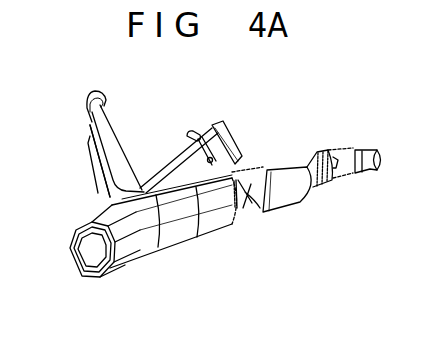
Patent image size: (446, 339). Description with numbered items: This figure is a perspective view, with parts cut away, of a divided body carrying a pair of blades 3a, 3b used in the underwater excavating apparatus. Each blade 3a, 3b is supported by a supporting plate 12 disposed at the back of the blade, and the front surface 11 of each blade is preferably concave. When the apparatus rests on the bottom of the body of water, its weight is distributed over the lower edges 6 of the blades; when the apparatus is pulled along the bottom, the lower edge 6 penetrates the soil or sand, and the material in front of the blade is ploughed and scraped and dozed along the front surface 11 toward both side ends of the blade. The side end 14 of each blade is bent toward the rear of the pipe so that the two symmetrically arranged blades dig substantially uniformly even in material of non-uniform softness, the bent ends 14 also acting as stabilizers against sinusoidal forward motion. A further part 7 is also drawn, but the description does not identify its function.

The blade 3a is at (90, 123).
The blade 3b is at (292, 170).
The lower edge 6 is at (194, 237).
The bracket 7 is at (231, 226).
The front surface 11 is at (158, 223).
The supporting plate 12 is at (110, 132).
The side end 14 is at (90, 100).